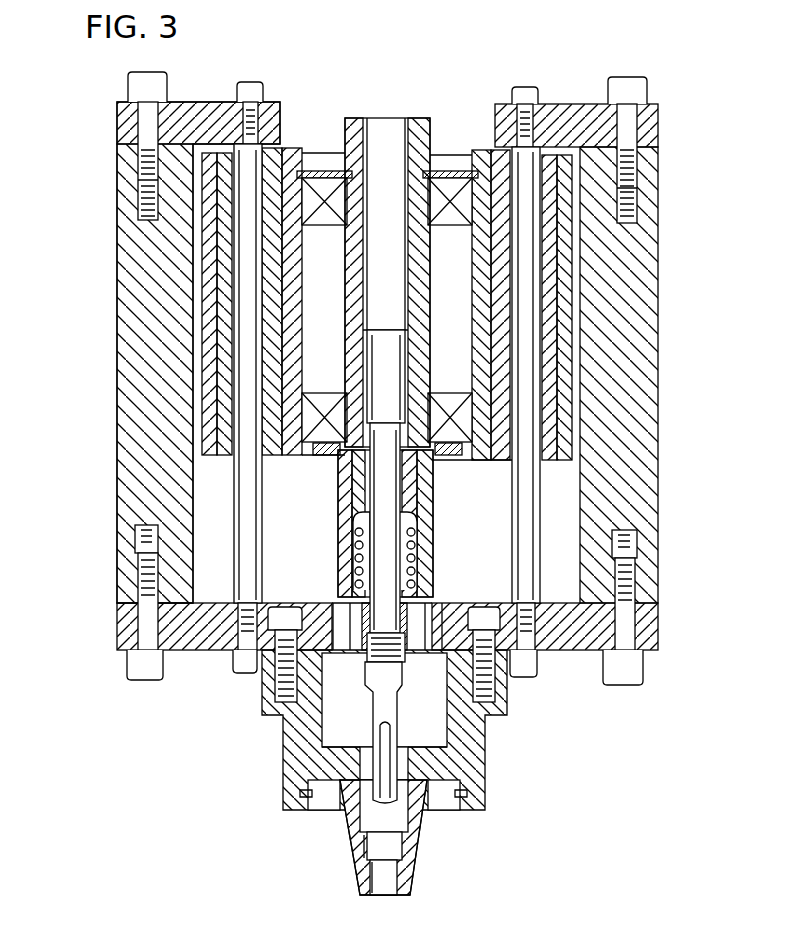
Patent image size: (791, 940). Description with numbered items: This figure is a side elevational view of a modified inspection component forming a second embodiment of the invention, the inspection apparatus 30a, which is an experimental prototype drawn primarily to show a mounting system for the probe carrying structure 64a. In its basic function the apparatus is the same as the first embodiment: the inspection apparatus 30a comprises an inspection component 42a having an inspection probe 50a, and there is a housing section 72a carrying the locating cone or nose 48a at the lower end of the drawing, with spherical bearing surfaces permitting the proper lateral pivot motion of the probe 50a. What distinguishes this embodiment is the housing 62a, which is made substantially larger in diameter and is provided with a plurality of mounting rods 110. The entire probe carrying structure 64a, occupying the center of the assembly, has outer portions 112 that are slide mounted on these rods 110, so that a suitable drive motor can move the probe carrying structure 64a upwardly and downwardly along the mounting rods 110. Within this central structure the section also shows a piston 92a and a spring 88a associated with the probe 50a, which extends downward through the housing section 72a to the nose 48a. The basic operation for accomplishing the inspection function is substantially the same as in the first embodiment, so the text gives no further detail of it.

The inspection apparatus 30a is at (106, 476).
The inspection component 42a is at (106, 517).
The housing 62a is at (659, 233).
The probe carrying structure 64a is at (348, 106).
The mounting rods 110 is at (530, 157).
The outer portions 112 is at (207, 262).
The piston 92a is at (357, 515).
The spring 88a is at (358, 537).
The inspection probe 50a is at (395, 702).
The housing section 72a is at (452, 762).
The locating cone or nose 48a is at (405, 867).